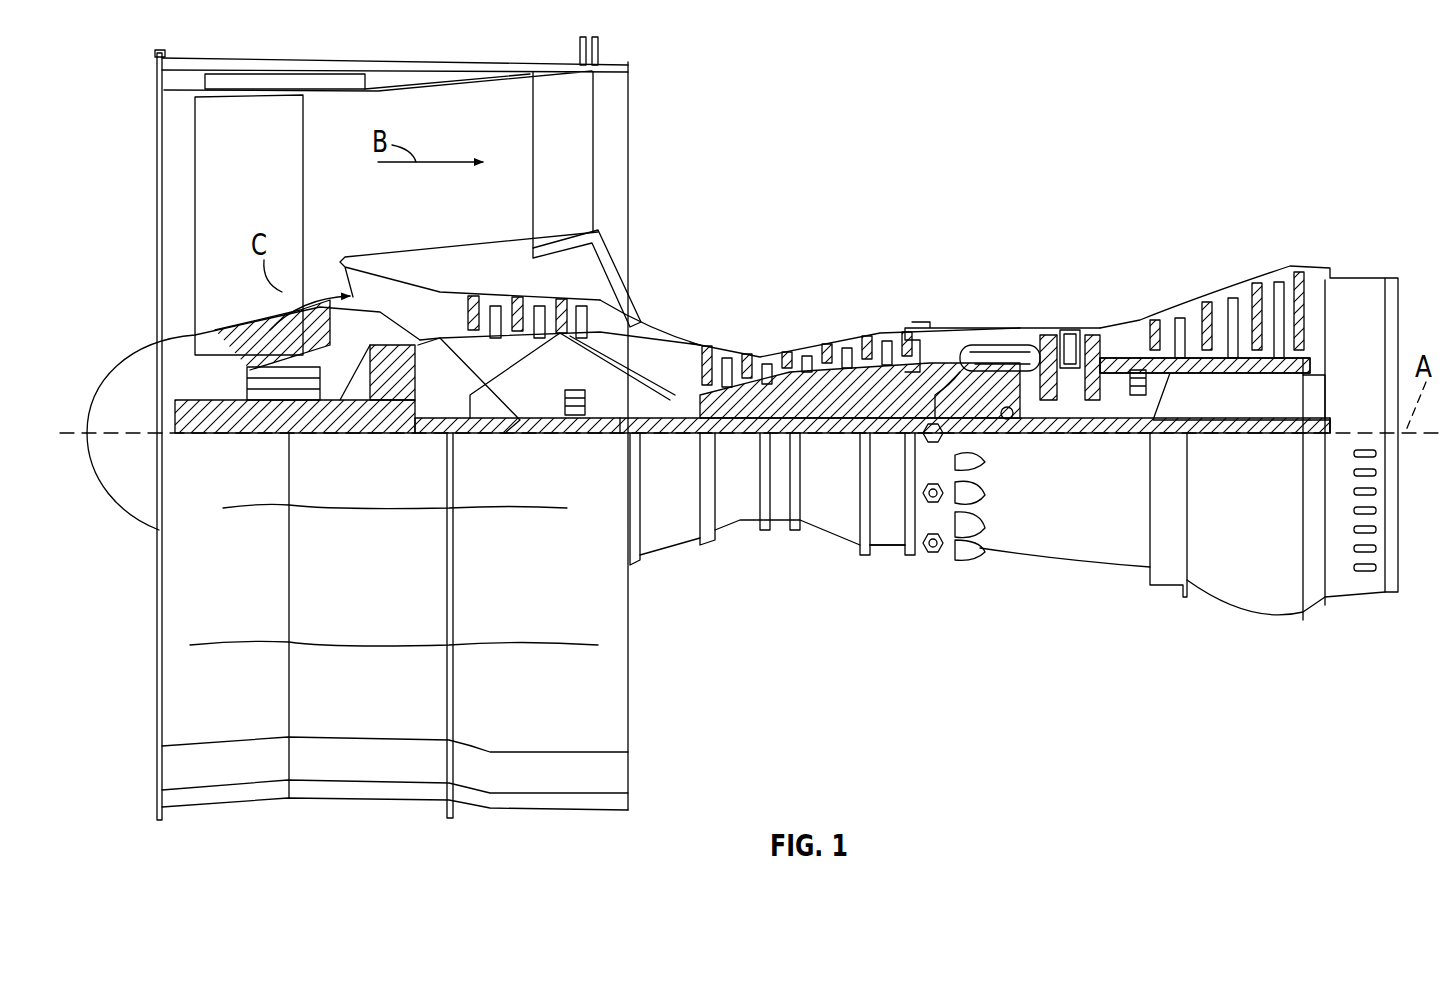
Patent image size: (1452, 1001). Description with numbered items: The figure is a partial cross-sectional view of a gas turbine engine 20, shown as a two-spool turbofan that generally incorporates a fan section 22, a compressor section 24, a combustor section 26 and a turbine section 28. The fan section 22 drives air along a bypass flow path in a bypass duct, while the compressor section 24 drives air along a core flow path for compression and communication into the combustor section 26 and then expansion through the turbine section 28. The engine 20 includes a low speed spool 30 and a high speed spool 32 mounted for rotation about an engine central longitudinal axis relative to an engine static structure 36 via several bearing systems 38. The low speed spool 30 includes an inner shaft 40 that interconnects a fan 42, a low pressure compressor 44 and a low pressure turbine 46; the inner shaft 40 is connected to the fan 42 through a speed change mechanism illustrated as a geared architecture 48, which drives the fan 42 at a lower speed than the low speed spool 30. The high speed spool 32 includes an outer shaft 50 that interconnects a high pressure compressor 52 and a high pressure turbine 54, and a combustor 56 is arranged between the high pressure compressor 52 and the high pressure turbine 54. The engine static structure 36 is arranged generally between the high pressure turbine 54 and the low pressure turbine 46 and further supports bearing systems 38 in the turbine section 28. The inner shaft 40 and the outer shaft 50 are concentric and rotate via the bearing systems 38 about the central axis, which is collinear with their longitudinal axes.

The gas turbine engine 20 is at (1210, 99).
The fan section 22 is at (270, 57).
The compressor section 24 is at (820, 296).
The combustor section 26 is at (986, 296).
The turbine section 28 is at (1138, 272).
The low speed spool 30 is at (850, 440).
The high speed spool 32 is at (908, 382).
The engine static structure 36 is at (890, 556).
The bearing systems 38 is at (260, 402).
The inner shaft 40 is at (645, 440).
The fan 42 is at (262, 186).
The low pressure compressor 44 is at (545, 310).
The low pressure turbine 46 is at (1236, 290).
The geared architecture 48 is at (395, 402).
The outer shaft 50 is at (1012, 422).
The high pressure compressor 52 is at (812, 388).
The high pressure turbine 54 is at (1070, 330).
The combustor 56 is at (997, 350).